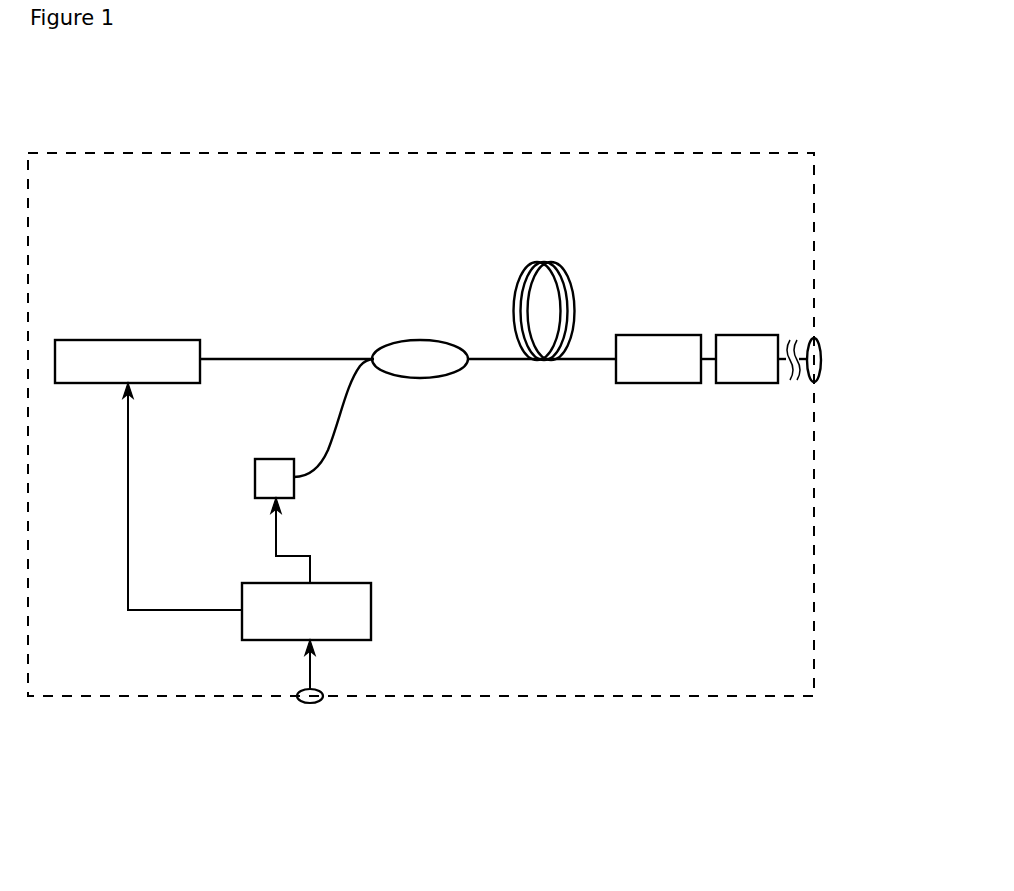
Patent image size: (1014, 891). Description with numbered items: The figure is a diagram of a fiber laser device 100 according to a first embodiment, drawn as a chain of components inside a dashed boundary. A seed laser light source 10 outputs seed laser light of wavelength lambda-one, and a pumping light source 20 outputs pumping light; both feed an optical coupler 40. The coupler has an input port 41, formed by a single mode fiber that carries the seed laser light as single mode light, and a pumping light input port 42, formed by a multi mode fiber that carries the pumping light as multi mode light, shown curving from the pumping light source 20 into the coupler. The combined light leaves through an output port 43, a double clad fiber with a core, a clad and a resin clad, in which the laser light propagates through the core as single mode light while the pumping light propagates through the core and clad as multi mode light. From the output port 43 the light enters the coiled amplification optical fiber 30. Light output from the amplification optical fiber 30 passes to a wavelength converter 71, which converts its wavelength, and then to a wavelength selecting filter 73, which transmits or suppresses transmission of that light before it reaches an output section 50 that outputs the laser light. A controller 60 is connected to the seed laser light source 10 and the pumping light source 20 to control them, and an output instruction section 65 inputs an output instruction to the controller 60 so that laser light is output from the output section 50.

The fiber laser device 100 is at (476, 153).
The seed laser light source 10 is at (130, 347).
The pumping light source 20 is at (268, 476).
The amplification optical fiber 30 is at (576, 357).
The optical coupler 40 is at (400, 310).
The input port 41 is at (300, 357).
The pumping light input port 42 is at (333, 430).
The output port 43 is at (490, 358).
The output section 50 is at (818, 341).
The controller 60 is at (280, 588).
The output instruction section 65 is at (318, 704).
The wavelength converter 71 is at (663, 377).
The wavelength selecting filter 73 is at (742, 377).